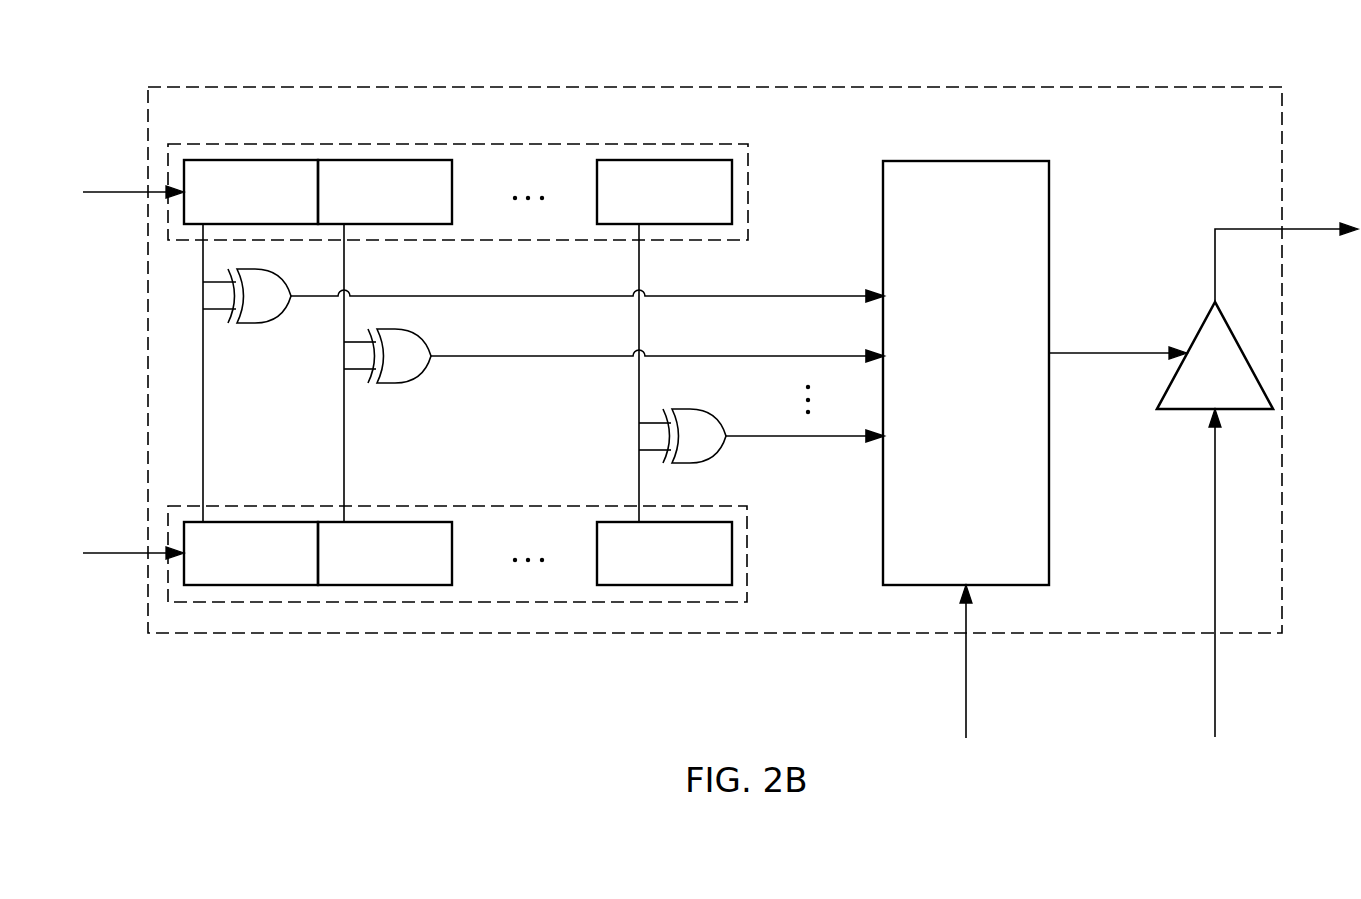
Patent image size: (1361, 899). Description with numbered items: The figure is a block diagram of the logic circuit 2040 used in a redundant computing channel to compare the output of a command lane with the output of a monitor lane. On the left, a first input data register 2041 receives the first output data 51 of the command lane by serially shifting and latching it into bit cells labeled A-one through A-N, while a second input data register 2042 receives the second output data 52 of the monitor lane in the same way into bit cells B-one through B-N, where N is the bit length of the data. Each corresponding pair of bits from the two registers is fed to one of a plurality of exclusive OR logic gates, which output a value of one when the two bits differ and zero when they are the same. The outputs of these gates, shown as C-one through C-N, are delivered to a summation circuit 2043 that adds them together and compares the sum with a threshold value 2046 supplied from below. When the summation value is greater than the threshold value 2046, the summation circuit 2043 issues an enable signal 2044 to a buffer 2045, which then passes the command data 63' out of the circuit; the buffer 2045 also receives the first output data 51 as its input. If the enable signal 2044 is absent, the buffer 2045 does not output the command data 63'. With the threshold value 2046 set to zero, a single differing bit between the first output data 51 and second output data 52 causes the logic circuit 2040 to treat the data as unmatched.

The logic circuit 2040 is at (315, 87).
The input data register 2041 is at (665, 144).
The input data register 2042 is at (665, 602).
The summation circuit 2043 is at (965, 161).
The enable signal 2044 is at (1100, 355).
The buffer 2045 is at (1201, 325).
The threshold value 2046 is at (966, 685).
The first output data 51 is at (114, 190).
The second output data 52 is at (113, 553).
The command data 63' is at (1286, 238).